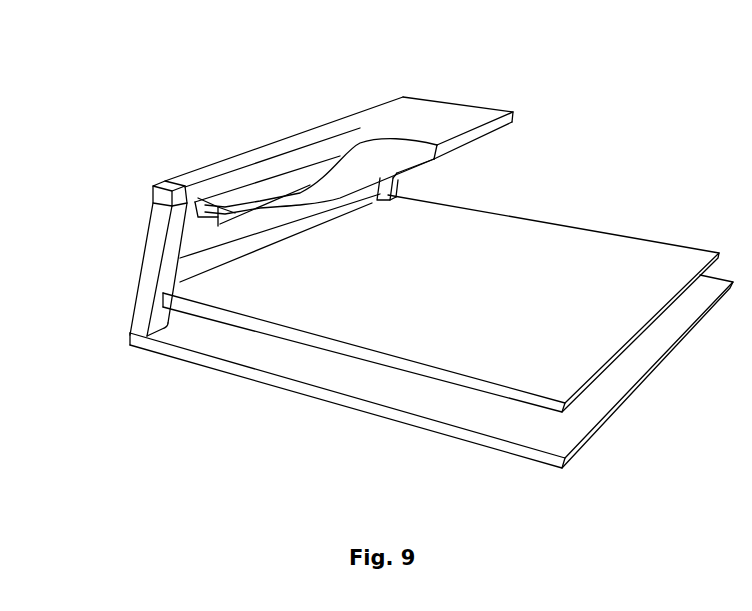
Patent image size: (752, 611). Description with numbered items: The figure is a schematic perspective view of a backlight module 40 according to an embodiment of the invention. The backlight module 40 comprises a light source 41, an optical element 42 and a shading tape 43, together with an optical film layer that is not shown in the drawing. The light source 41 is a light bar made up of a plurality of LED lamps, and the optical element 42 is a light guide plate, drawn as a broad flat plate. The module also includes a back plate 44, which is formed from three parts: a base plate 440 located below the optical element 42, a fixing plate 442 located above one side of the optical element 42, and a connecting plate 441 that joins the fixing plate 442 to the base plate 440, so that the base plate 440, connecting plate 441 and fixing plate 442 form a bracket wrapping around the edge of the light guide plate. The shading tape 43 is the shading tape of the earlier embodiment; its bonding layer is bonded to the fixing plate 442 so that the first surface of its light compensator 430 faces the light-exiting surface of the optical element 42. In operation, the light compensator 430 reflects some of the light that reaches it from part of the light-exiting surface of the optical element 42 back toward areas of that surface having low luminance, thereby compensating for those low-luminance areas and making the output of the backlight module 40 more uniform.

The backlight module 40 is at (336, 40).
The light source 41 is at (238, 231).
The optical element 42 is at (499, 250).
The shading tape 43 is at (341, 165).
The light compensator 430 is at (244, 201).
The back plate 44 is at (58, 323).
The base plate 440 is at (153, 356).
The connecting plate 441 is at (127, 311).
The fixing plate 442 is at (148, 208).